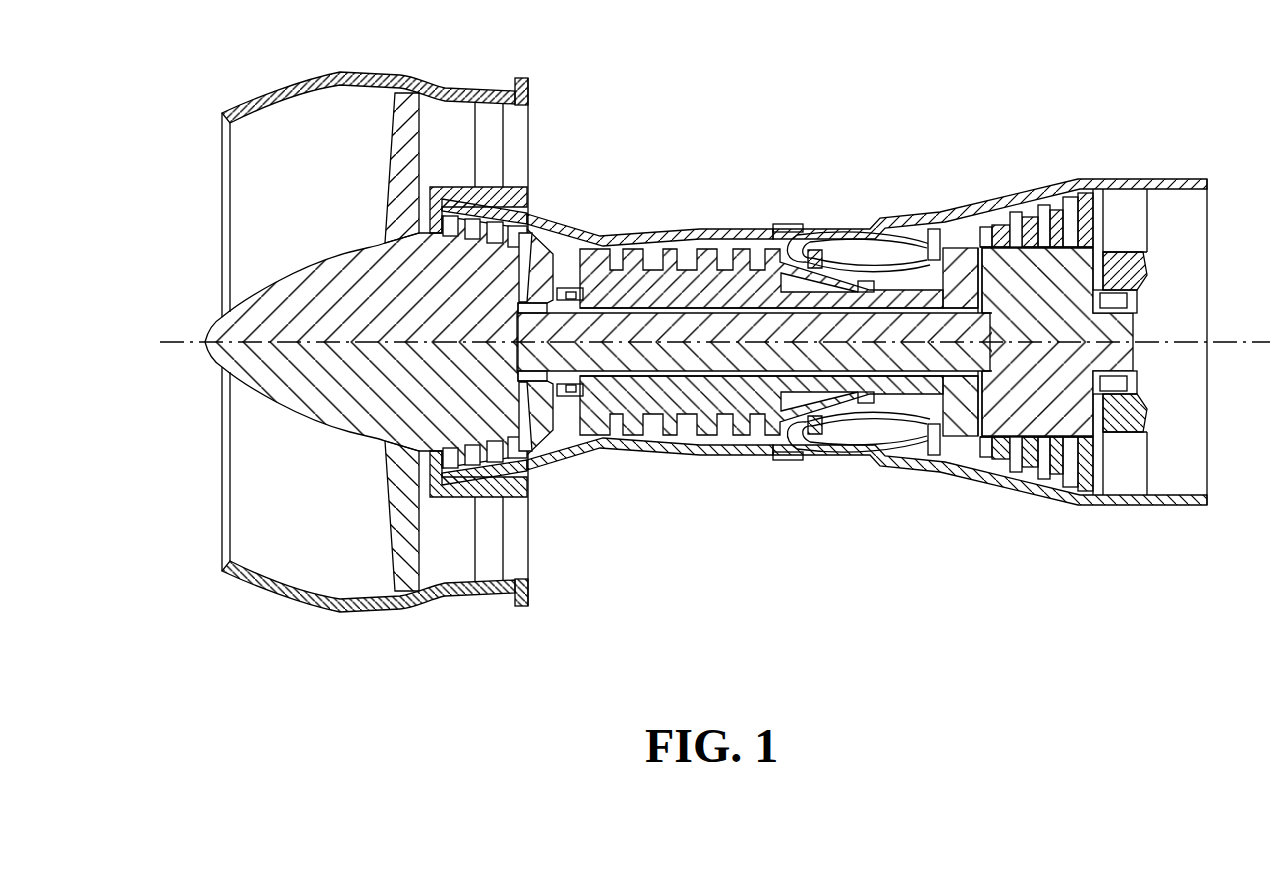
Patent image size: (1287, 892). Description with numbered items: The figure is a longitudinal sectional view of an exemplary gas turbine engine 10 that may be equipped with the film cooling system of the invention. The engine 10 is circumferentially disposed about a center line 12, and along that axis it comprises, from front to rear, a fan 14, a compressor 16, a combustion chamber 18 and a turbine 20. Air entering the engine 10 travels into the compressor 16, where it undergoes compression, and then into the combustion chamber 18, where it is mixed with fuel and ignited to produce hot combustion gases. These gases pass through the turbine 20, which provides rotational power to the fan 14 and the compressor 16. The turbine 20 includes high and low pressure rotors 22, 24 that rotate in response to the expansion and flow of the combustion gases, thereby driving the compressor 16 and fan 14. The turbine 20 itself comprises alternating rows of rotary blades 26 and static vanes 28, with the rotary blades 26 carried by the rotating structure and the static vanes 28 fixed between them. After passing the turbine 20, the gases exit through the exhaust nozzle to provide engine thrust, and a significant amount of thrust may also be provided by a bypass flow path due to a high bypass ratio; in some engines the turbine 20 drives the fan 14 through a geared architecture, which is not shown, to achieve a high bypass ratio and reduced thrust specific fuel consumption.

The gas turbine engine 10 is at (545, 150).
The center line 12 is at (191, 340).
The fan 14 is at (392, 143).
The compressor 16 is at (754, 207).
The combustion chamber 18 is at (937, 207).
The turbine 20 is at (1112, 128).
The high pressure rotor 22 is at (960, 278).
The low pressure rotor 24 is at (1055, 283).
The rotary blade 26 is at (1027, 220).
The static vane 28 is at (1017, 218).